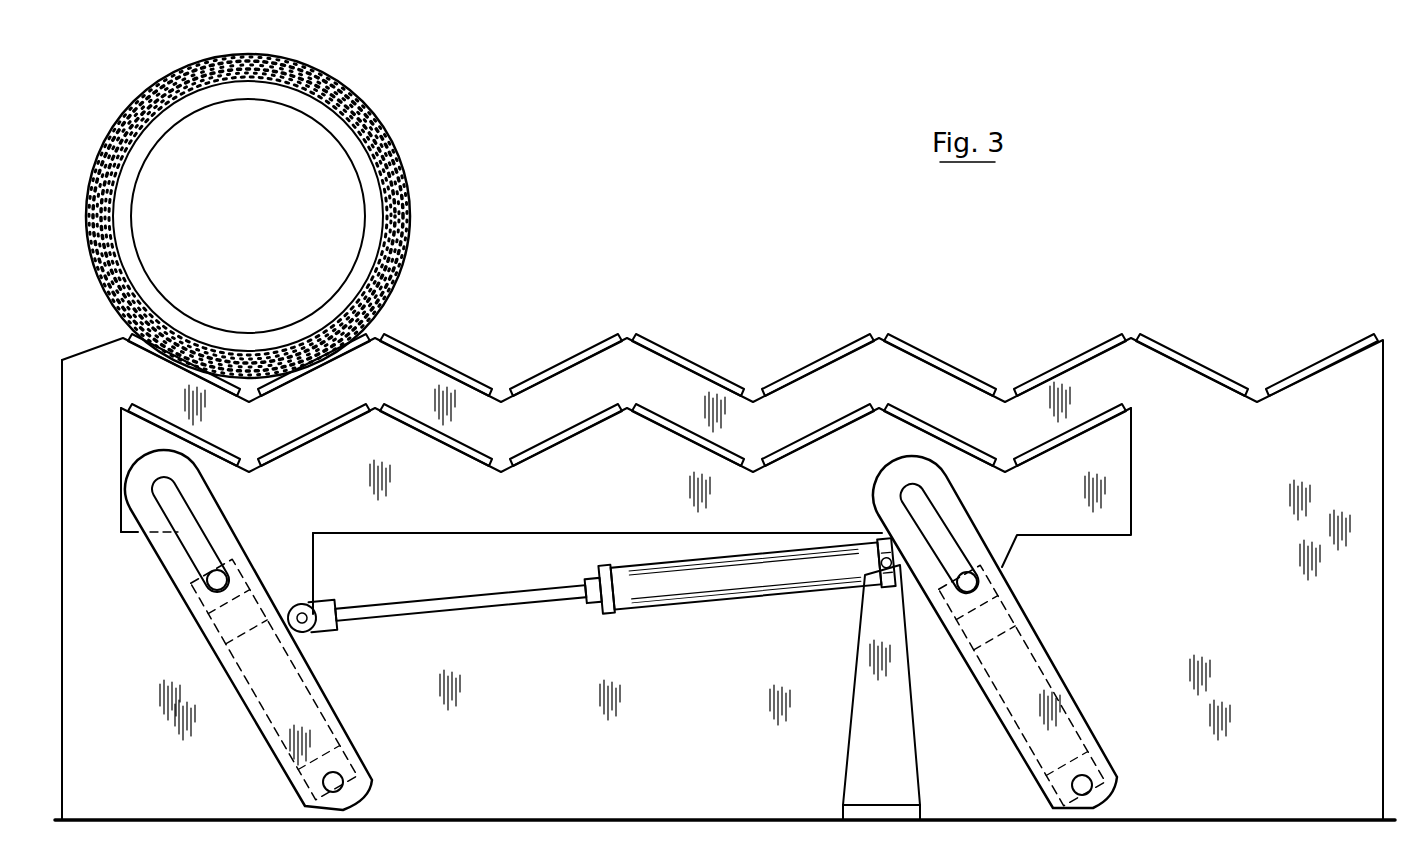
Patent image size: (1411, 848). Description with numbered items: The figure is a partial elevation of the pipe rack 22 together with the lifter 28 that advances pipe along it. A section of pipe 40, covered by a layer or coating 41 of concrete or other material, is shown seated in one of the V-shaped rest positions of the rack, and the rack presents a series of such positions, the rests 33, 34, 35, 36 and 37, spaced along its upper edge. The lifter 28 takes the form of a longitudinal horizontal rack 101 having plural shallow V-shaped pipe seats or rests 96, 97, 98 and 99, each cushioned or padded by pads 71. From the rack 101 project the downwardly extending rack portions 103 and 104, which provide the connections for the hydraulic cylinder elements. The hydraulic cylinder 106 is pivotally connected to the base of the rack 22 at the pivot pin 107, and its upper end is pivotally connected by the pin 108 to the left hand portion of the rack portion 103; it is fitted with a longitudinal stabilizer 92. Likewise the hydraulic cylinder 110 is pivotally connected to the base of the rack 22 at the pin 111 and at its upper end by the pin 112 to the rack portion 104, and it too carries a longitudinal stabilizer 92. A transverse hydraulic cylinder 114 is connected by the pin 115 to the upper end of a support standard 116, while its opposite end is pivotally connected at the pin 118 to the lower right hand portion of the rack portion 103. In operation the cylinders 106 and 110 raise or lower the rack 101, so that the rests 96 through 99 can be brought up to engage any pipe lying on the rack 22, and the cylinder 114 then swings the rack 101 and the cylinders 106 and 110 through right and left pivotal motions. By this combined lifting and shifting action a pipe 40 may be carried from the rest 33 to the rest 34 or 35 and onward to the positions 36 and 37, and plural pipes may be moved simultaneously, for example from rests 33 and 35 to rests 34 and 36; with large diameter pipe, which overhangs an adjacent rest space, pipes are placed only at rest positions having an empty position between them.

The rack 22 is at (545, 705).
The lifter 28 is at (440, 534).
The rest 33 is at (265, 372).
The rest 34 is at (518, 379).
The rest 35 is at (778, 380).
The rest 36 is at (1020, 379).
The rest 37 is at (1280, 385).
The pipe 40 is at (300, 80).
The coating 41 is at (340, 92).
The pads 71 is at (753, 372).
The longitudinal stabilizer 92 is at (642, 632).
The pipe rest 96 is at (228, 455).
The pipe rest 97 is at (516, 468).
The pipe rest 98 is at (777, 469).
The pipe rest 99 is at (1018, 468).
The longitudinal horizontal rack 101 is at (1134, 478).
The rack portion 103 is at (314, 573).
The rack portion 104 is at (1008, 558).
The hydraulic cylinder 106 is at (263, 730).
The pivot pin 107 is at (320, 797).
The pin 108 is at (208, 587).
The hydraulic cylinder 110 is at (1063, 664).
The pin 111 is at (1095, 777).
The pin 112 is at (978, 588).
The transverse hydraulic cylinder 114 is at (663, 604).
The pin 115 is at (880, 570).
The support standard 116 is at (860, 667).
The pin 118 is at (318, 634).